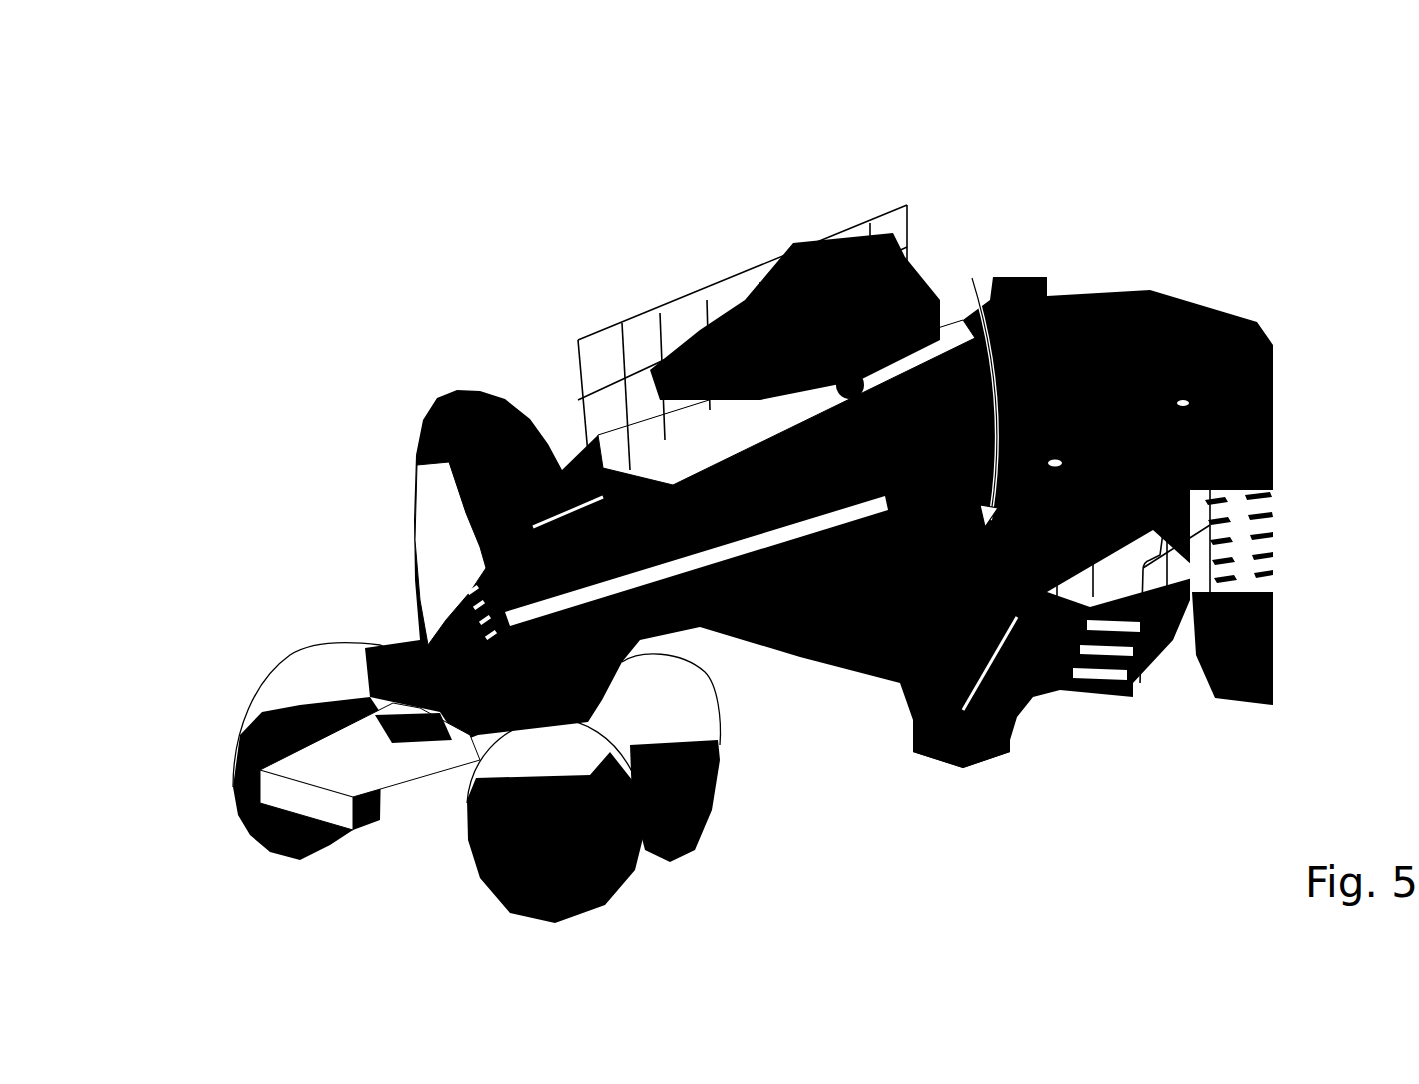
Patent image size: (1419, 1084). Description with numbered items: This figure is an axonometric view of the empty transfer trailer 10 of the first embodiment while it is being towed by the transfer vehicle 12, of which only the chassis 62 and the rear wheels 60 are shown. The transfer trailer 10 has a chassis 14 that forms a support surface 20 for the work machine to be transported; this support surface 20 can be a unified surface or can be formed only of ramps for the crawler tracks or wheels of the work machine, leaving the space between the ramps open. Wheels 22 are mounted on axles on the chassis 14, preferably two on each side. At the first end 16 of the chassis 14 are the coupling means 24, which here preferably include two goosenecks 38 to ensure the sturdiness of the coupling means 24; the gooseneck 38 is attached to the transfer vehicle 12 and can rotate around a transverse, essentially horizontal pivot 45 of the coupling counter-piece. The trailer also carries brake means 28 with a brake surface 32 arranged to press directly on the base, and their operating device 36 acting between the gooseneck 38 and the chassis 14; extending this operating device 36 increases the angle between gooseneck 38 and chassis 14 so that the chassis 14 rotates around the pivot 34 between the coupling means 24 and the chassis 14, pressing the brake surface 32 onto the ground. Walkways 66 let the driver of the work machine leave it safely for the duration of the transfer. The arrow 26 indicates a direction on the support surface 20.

The transfer trailer 10 is at (1040, 190).
The transfer vehicle 12 is at (232, 672).
The chassis 14 is at (1235, 300).
The first end 16 is at (866, 710).
The support surface 20 is at (1150, 298).
The wheels 22 is at (787, 290).
The coupling means 24 is at (473, 350).
The direction arrow 26 is at (969, 387).
The brake means 28 is at (585, 315).
The brake surface 32 is at (975, 768).
The pivot 34 is at (985, 745).
The operating device 36 is at (557, 460).
The gooseneck 38 is at (430, 417).
The pivot 45 is at (632, 858).
The rear wheels 60 is at (600, 880).
The chassis 62 is at (362, 777).
The walkways 66 is at (1233, 450).